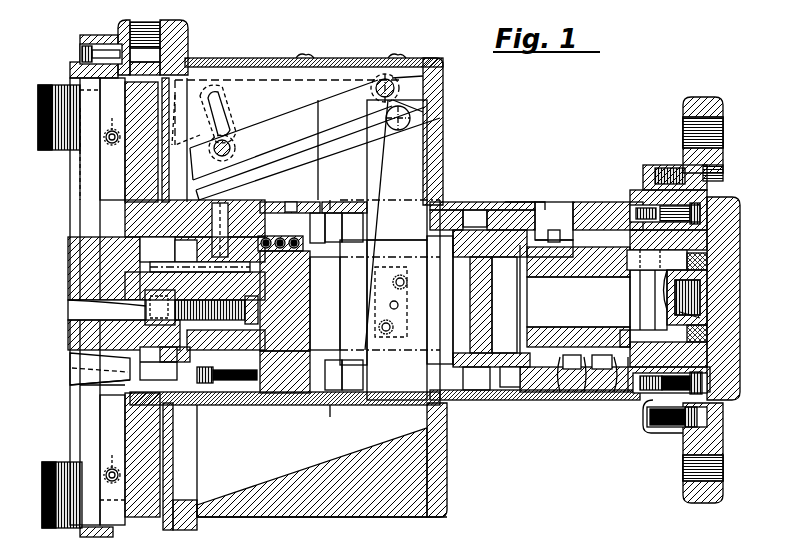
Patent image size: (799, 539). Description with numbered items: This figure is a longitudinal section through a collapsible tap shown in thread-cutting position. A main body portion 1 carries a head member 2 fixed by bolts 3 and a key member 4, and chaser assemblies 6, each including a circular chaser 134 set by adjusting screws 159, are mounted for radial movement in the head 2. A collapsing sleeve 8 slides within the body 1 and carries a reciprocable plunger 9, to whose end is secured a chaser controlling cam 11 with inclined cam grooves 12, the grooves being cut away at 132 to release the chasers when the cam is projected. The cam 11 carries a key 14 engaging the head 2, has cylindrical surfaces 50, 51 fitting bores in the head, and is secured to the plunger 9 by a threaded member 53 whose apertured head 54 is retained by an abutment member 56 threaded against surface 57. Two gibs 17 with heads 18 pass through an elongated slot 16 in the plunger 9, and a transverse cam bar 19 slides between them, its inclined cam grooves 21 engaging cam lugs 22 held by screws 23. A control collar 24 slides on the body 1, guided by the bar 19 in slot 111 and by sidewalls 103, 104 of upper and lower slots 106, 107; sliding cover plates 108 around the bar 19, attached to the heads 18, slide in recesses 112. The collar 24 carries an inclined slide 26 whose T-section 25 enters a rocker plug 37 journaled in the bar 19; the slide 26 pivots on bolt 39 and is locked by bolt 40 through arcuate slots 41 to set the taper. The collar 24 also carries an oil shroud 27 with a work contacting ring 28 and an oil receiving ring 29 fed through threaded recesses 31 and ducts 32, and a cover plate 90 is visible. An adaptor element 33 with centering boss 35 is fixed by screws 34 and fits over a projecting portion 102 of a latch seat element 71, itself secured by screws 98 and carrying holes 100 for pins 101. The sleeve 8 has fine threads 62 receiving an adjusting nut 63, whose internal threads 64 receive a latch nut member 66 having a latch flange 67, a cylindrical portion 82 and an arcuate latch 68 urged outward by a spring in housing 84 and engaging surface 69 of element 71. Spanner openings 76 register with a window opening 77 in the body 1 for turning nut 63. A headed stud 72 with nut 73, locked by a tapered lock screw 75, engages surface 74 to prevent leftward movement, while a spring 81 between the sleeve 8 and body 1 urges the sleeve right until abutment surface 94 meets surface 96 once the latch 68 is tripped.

The main body portion 1 is at (588, 204).
The head member 2 is at (124, 176).
The bolts 3 is at (206, 384).
The key member 4 is at (222, 203).
The chaser assemblies 6 is at (82, 178).
The collapsing sleeve 8 is at (318, 213).
The reciprocable plunger 9 is at (310, 272).
The chaser controlling cam 11 is at (383, 74).
The inclined cam grooves 12 is at (72, 368).
The key 14 is at (162, 262).
The elongated slot 16 is at (294, 322).
The semi-cylindrical gibs 17 is at (342, 287).
The heads 18 is at (344, 301).
The transverse cam bar 19 is at (372, 182).
The inclined cam grooves 21 is at (412, 230).
The cam lugs 22 is at (398, 308).
The screws 23 is at (376, 340).
The control collar 24 is at (268, 56).
The T-section 25 is at (296, 142).
The inclined cam member or slide 26 is at (291, 130).
The oil shroud 27 is at (188, 44).
The work contacting ring 28 is at (80, 58).
The oil receiving ring 29 is at (170, 22).
The threaded recesses 31 is at (118, 30).
The ducts 32 is at (134, 512).
The adaptor element 33 is at (716, 97).
The screws 34 is at (716, 176).
The locating and centering boss 35 is at (734, 197).
The rocker plug 37 is at (412, 122).
The bolt 39 is at (441, 70).
The bolt 40 is at (230, 138).
The arcuate slots 41 is at (222, 102).
The cylindrical surface 50 is at (70, 237).
The cylindrical surface 51 is at (158, 362).
The threaded member 53 is at (100, 320).
The apertured head 54 is at (100, 302).
The abutment member 56 is at (182, 362).
The surface 57 is at (150, 268).
The fine threads 62 is at (512, 390).
The adjusting nut 63 is at (558, 400).
The internal threads 64 is at (570, 392).
The threaded latch nut member 66 is at (590, 400).
The latch flange 67 is at (604, 392).
The arcuate latch 68 is at (618, 400).
The surface 69 is at (632, 398).
The latch seat element 71 is at (708, 350).
The headed stud 72 is at (652, 304).
The nut 73 is at (700, 298).
The surface 74 is at (700, 314).
The tapered lock screw 75 is at (700, 286).
The spanner openings 76 is at (552, 231).
The window opening 77 is at (574, 204).
The spring 81 is at (264, 236).
The cylindrical portion 82 is at (645, 190).
The housing 84 is at (614, 204).
The cover plate 90 is at (447, 470).
The abutment surface 94 is at (640, 288).
The surface 96 is at (654, 296).
The screws 98 is at (712, 372).
The holes 100 is at (716, 252).
The pins 101 is at (708, 262).
The projecting portion 102 is at (720, 412).
The sidewall 103 is at (334, 150).
The sidewall 104 is at (322, 461).
The upper slot 106 is at (332, 68).
The lower slot 107 is at (228, 496).
The sliding cover plates 108 is at (322, 405).
The slot 111 is at (476, 210).
The recesses 112 is at (524, 202).
The cut-away 132 is at (136, 232).
The chaser 134 is at (44, 86).
The adjusting screws 159 is at (112, 127).